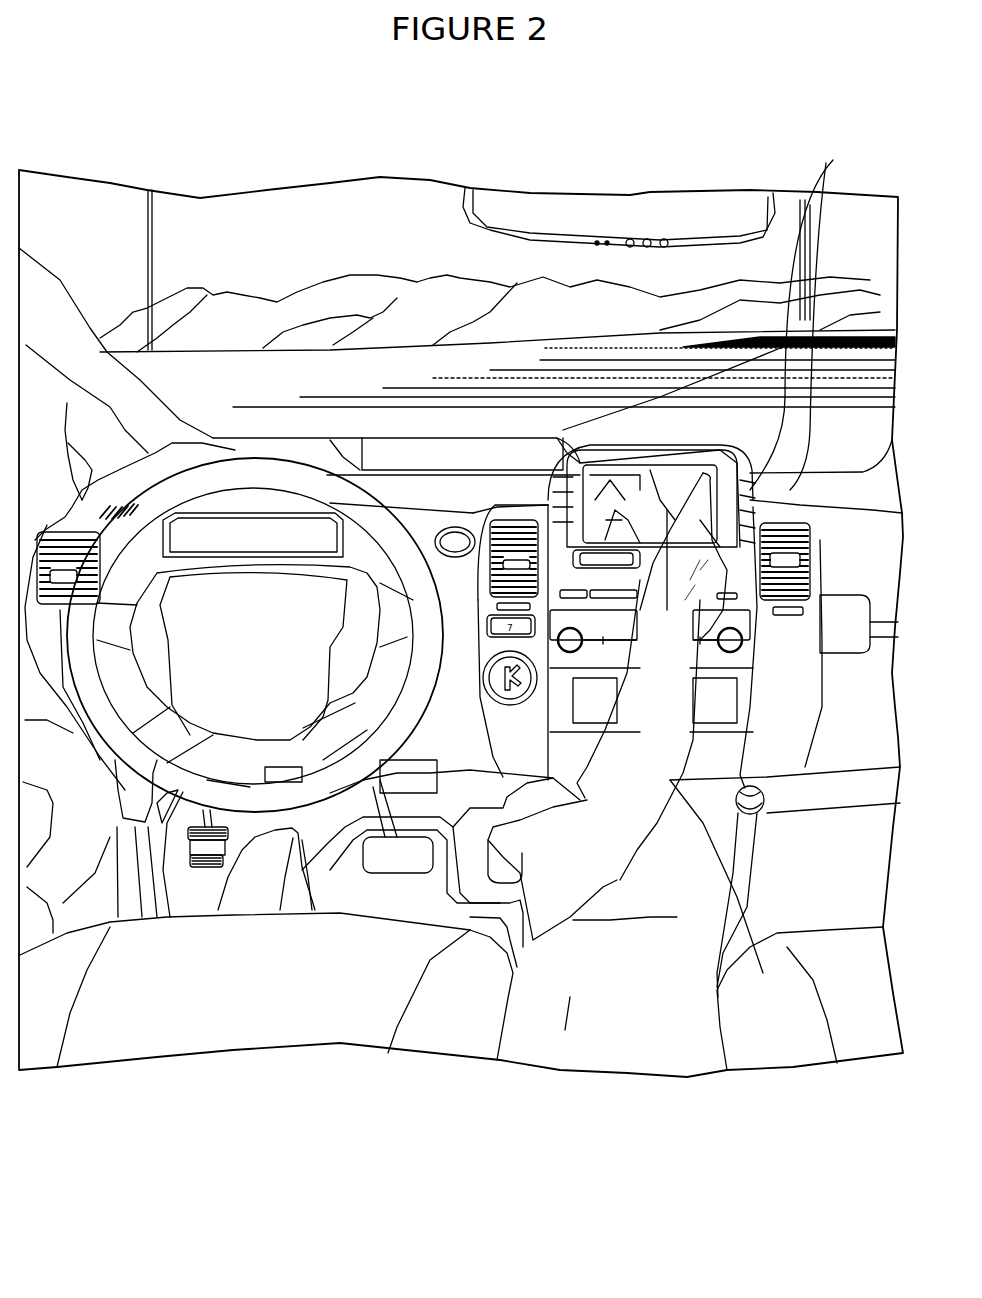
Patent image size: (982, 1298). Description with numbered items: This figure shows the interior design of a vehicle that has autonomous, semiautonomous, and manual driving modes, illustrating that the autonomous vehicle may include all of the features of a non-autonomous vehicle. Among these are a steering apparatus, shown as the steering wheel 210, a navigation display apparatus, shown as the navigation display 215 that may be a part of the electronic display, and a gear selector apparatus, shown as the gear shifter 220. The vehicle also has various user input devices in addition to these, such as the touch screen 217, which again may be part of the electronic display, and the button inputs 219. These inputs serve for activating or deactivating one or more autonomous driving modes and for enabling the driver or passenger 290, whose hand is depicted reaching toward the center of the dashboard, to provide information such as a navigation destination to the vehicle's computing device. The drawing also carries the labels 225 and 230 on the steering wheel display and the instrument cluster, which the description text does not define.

The steering wheel 210 is at (170, 917).
The navigation display 215 is at (650, 435).
The touch screen 217 is at (760, 813).
The button inputs 219 is at (833, 160).
The gear shifter 220 is at (467, 577).
The steering wheel display 225 is at (257, 520).
The instrument cluster display 230 is at (380, 447).
The driver or passenger 290 is at (622, 773).